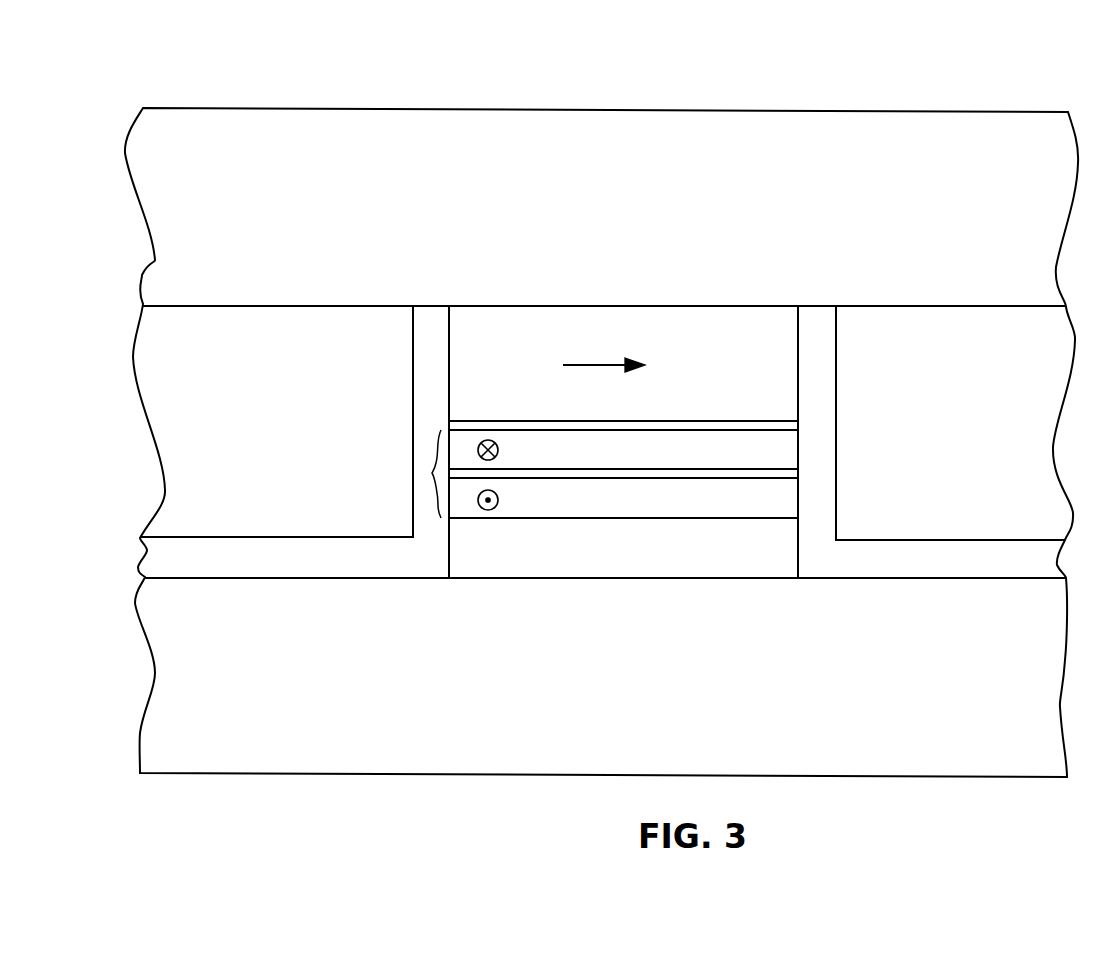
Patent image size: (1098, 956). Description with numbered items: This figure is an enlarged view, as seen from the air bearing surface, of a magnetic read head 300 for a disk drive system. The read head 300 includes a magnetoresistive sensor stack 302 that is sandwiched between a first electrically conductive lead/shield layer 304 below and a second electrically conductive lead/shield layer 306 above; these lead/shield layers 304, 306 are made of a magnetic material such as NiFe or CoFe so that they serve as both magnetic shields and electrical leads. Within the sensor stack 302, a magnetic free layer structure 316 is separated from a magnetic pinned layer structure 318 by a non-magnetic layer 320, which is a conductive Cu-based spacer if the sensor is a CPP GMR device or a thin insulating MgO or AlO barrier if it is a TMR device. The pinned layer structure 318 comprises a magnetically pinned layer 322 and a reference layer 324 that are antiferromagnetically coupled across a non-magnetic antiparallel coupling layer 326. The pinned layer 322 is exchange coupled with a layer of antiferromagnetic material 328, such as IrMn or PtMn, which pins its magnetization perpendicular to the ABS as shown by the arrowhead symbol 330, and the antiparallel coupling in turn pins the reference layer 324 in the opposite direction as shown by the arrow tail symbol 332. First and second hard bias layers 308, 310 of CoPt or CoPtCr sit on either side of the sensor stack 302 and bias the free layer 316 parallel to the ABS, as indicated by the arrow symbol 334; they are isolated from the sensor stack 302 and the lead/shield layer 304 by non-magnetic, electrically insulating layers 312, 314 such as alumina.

The read head 300 is at (818, 110).
The magnetoresistive sensor stack 302 is at (703, 306).
The first electrically conductive lead/shield layer 304 is at (682, 678).
The second electrically conductive lead/shield layer 306 is at (662, 193).
The first hard bias layer 308 is at (979, 420).
The second hard bias layer 310 is at (287, 405).
The non-magnetic electrically insulating layer 312 is at (1018, 558).
The non-magnetic electrically insulating layer 314 is at (346, 557).
The magnetic free layer structure 316 is at (667, 397).
The magnetic pinned layer structure 318 is at (436, 455).
The non-magnetic layer 320 is at (681, 427).
The magnetically pinned layer 322 is at (666, 498).
The reference layer 324 is at (666, 449).
The non-magnetic antiparallel coupling layer 326 is at (662, 474).
The layer of antiferromagnetic material 328 is at (666, 548).
The arrowhead symbol 330 is at (499, 499).
The arrow tail symbol 332 is at (499, 449).
The arrow symbol 334 is at (600, 363).